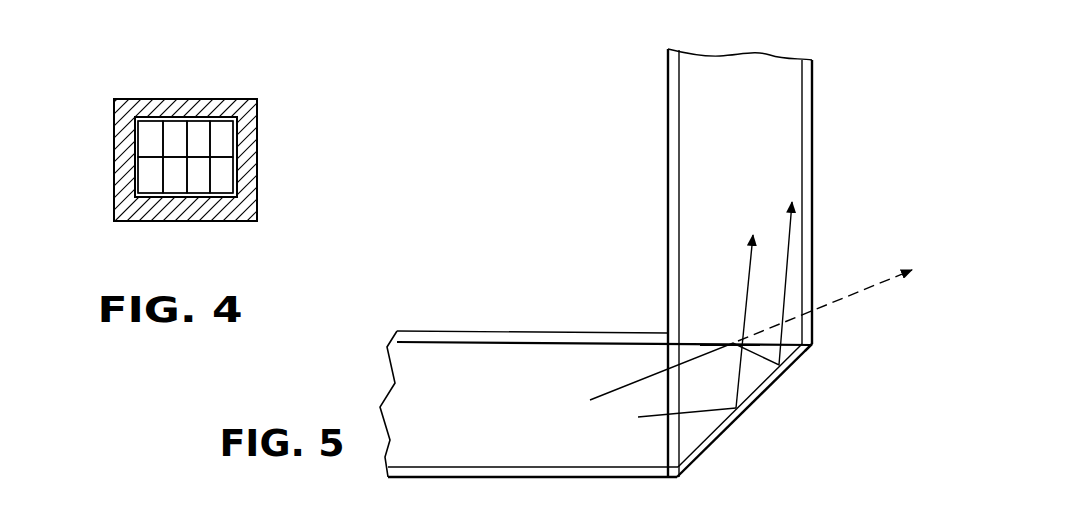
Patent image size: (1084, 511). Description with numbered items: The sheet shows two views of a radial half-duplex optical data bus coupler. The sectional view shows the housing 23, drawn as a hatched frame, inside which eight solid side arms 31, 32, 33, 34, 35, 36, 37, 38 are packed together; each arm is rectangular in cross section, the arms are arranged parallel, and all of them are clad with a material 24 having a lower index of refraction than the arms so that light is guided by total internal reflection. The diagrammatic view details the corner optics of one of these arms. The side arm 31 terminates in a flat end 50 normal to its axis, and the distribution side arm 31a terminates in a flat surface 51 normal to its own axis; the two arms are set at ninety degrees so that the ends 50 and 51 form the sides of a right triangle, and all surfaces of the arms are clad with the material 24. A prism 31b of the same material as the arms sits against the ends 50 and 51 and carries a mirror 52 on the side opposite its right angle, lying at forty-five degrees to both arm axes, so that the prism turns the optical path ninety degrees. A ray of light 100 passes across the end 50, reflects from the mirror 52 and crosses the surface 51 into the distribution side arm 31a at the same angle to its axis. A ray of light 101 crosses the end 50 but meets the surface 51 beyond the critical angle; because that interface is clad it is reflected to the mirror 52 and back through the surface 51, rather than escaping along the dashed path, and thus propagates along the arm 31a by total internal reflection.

In FIG. 4, the housing 23 is at (257, 128).
In FIG. 4, the cladding material 24 is at (150, 118).
In FIG. 5, the cladding material 24 is at (590, 331).
In FIG. 4, the side arm 31 is at (147, 140).
In FIG. 5, the side arm 31 is at (450, 352).
In FIG. 5, the distribution side arm 31a is at (763, 155).
In FIG. 5, the prism 31b is at (747, 385).
In FIG. 4, the side arm 32 is at (143, 177).
In FIG. 4, the side arm 33 is at (177, 128).
In FIG. 4, the side arm 34 is at (172, 185).
In FIG. 4, the side arm 35 is at (198, 128).
In FIG. 4, the side arm 36 is at (200, 185).
In FIG. 4, the side arm 37 is at (227, 132).
In FIG. 4, the side arm 38 is at (223, 178).
In FIG. 5, the end of side arm 50 is at (668, 430).
In FIG. 5, the end surface of distribution arm 51 is at (731, 332).
In FIG. 5, the mirror 52 is at (800, 353).
In FIG. 5, the ray of light 100 is at (708, 408).
In FIG. 5, the ray of light 101 is at (615, 391).